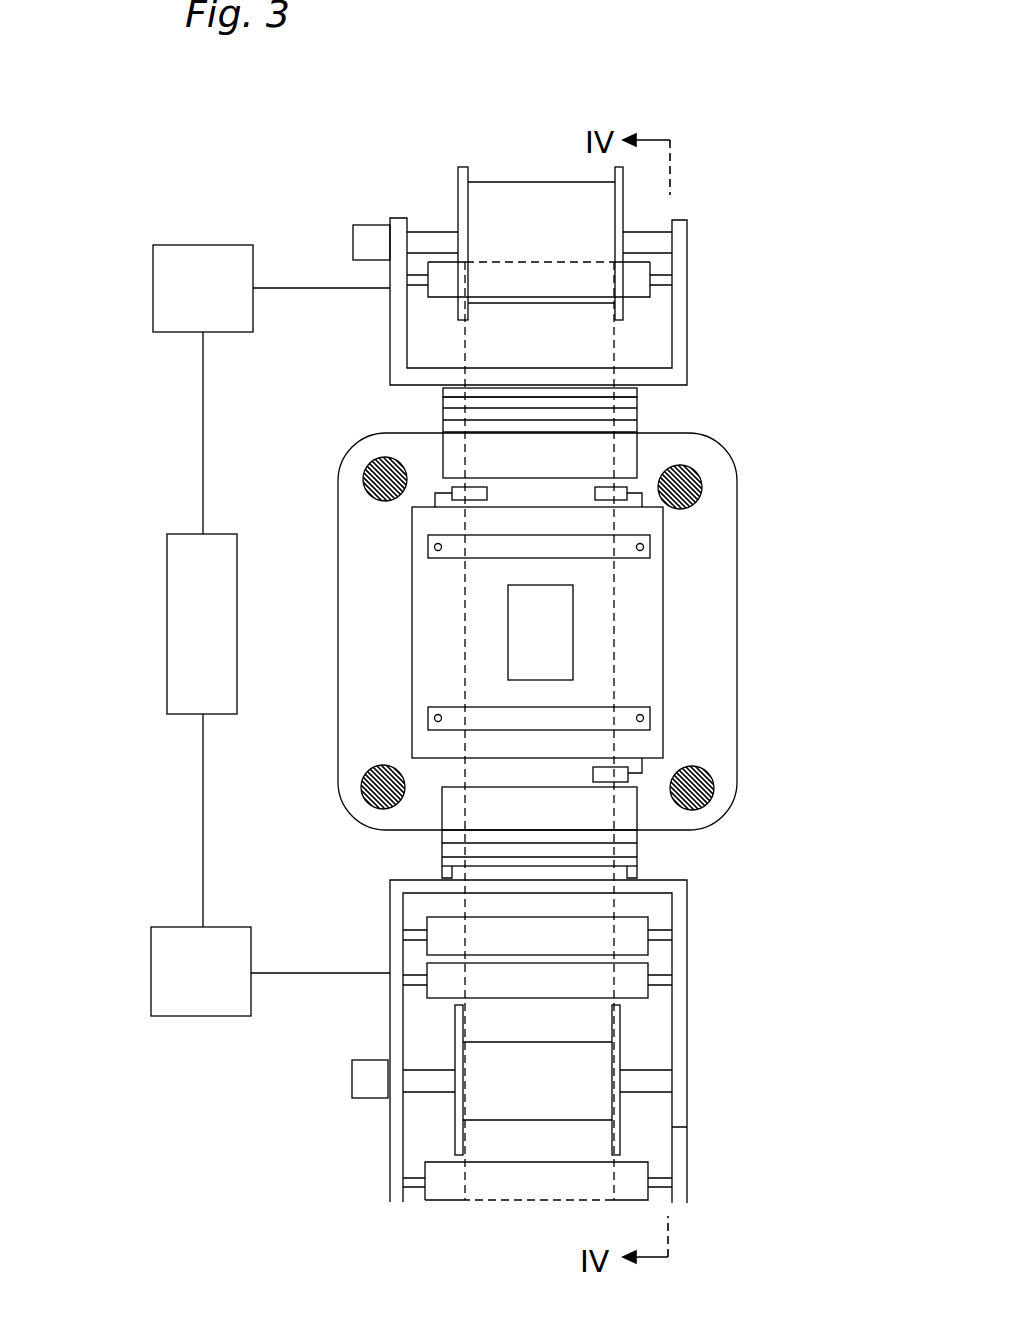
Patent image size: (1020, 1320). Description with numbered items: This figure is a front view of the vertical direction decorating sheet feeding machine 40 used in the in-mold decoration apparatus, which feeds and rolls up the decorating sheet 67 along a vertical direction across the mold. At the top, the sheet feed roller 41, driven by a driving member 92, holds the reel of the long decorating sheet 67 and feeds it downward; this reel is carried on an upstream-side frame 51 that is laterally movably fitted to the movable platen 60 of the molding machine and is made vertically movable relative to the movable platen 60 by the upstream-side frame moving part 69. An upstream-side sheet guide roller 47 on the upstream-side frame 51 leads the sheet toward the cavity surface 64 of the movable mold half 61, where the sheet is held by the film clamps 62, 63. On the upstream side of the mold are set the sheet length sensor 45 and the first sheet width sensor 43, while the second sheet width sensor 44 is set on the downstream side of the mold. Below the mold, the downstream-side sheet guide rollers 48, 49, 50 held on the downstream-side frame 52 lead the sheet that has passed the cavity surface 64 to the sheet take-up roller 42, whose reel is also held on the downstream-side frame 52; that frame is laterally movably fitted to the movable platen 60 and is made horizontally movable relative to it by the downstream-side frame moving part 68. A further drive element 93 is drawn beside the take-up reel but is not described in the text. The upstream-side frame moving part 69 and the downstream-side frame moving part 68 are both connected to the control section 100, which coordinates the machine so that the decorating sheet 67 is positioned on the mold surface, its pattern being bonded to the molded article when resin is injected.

The vertical direction decorating sheet feeding machine 40 is at (688, 192).
The sheet feed roller 41 is at (458, 186).
The sheet take-up roller 42 is at (455, 1118).
The first sheet width sensor 43 is at (628, 487).
The second sheet width sensor 44 is at (628, 782).
The sheet length sensor 45 is at (455, 490).
The upstream-side sheet guide roller 47 is at (650, 298).
The downstream-side sheet guide roller 48 is at (427, 906).
The downstream-side sheet guide roller 49 is at (427, 996).
The downstream-side sheet guide roller 50 is at (666, 1198).
The upstream-side frame 51 is at (390, 352).
The downstream-side frame 52 is at (687, 1013).
The movable platen 60 is at (737, 539).
The movable mold half 61 is at (663, 700).
The film clamp 62 is at (430, 547).
The film clamp 63 is at (430, 718).
The cavity surface 64 is at (508, 630).
The decorating sheet 67 is at (614, 636).
The downstream-side frame moving part 68 is at (151, 948).
The upstream-side frame moving part 69 is at (153, 301).
The driving member 92 is at (353, 238).
The motor 93 is at (352, 1080).
The control section 100 is at (167, 549).